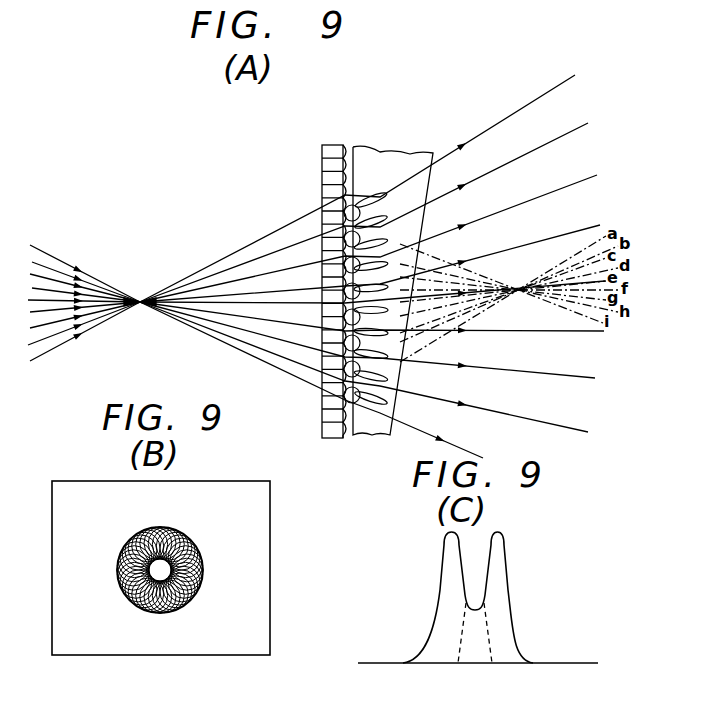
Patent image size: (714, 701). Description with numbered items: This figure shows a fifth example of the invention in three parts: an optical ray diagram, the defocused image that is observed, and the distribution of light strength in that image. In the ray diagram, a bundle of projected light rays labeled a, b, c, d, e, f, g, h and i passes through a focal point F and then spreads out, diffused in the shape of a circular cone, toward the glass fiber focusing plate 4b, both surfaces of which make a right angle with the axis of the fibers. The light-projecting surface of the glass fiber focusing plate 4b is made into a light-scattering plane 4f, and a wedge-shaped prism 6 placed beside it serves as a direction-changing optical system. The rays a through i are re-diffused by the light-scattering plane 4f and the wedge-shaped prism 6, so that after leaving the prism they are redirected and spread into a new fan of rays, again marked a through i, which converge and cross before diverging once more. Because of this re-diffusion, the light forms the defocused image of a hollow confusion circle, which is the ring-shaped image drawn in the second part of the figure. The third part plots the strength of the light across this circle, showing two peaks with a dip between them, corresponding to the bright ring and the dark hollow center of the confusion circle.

The glass fiber focusing plate 4b is at (326, 160).
The light-scattering plane 4f is at (360, 150).
The wedge-shaped prism 6 is at (430, 158).
The focal point F is at (140, 318).
The light ray a is at (254, 344).
The light ray b is at (305, 345).
The light ray c is at (313, 326).
The light ray d is at (308, 313).
The light ray e is at (311, 295).
The light ray f is at (308, 265).
The light ray g is at (314, 250).
The light ray h is at (304, 232).
The light ray i is at (301, 215).